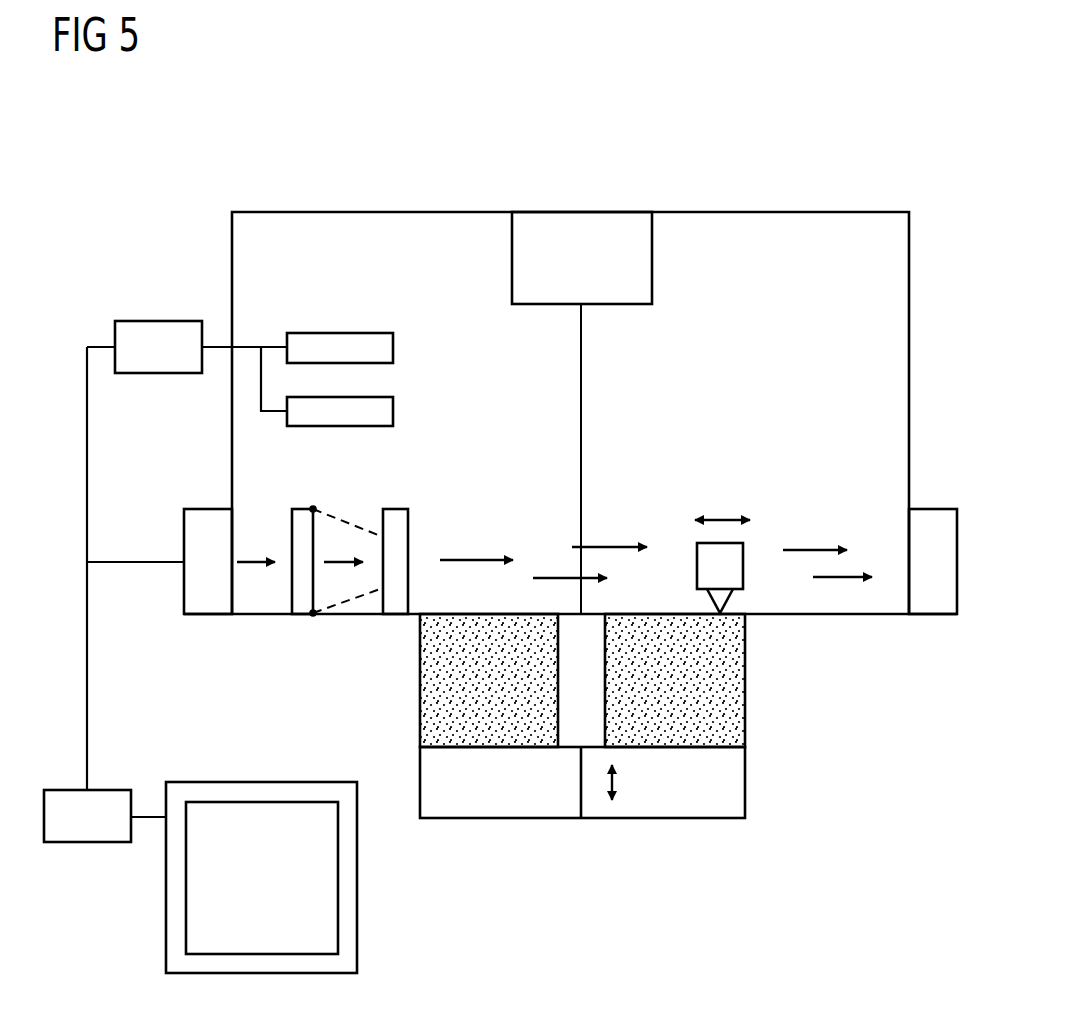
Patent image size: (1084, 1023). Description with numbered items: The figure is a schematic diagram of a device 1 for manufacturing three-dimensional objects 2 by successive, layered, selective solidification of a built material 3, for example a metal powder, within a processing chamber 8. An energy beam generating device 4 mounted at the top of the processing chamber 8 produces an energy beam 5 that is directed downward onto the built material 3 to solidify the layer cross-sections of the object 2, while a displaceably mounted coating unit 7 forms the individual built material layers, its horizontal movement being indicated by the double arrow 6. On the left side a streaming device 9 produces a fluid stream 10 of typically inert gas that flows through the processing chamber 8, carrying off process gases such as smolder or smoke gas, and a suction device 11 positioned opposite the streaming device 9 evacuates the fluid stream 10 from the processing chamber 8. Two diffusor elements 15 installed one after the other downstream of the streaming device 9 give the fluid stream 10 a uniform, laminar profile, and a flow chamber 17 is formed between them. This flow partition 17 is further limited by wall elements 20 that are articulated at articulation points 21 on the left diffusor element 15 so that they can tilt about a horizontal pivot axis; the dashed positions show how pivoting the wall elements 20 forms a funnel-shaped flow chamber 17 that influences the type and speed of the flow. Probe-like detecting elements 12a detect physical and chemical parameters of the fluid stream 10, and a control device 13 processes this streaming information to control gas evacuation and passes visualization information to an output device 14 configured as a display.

The device 1 is at (741, 113).
The three-dimensional object 2 is at (570, 700).
The built material 3 is at (728, 713).
The energy beam generating device 4 is at (578, 225).
The energy beam 5 is at (582, 355).
The horizontal double arrow 6 is at (722, 518).
The coating unit 7 is at (743, 566).
The processing chamber 8 is at (797, 212).
The streaming device 9 is at (205, 509).
The fluid stream 10 is at (492, 560).
The suction device 11 is at (940, 509).
The detecting elements 12a is at (393, 348).
The control device 13 is at (108, 790).
The output device 14 is at (237, 782).
The diffusion element 15 is at (295, 509).
The flow chamber 17 is at (358, 616).
The wall element 20 is at (358, 521).
The articulation points 21 is at (313, 506).